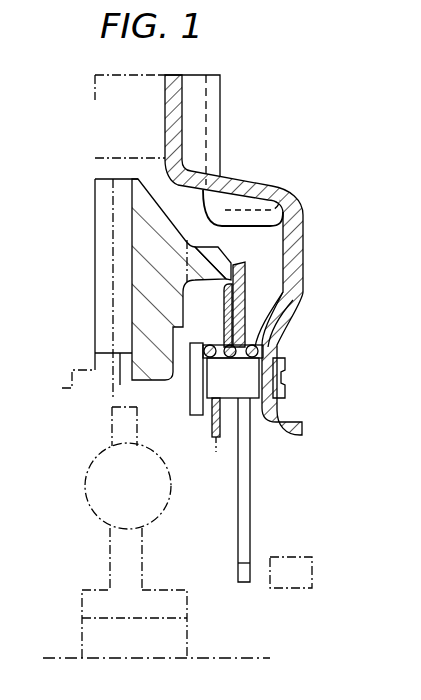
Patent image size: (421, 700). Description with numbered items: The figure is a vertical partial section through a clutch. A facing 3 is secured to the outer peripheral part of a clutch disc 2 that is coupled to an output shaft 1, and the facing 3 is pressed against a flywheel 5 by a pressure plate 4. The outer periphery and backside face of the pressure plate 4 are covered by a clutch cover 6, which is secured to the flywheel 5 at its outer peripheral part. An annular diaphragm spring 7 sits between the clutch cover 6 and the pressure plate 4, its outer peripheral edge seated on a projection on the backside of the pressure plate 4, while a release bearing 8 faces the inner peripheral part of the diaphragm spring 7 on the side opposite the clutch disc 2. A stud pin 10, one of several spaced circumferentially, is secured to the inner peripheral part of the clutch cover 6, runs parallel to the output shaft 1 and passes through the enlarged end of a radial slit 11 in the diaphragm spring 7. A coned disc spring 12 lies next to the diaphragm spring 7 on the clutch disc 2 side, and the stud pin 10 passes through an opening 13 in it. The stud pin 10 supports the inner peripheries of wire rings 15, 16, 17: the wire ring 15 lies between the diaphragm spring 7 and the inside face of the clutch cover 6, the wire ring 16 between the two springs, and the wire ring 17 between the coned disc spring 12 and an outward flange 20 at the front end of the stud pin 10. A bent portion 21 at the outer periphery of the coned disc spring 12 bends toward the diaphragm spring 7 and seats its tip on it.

The output shaft 1 is at (250, 658).
The clutch disc 2 is at (112, 538).
The facing 3 is at (113, 355).
The pressure plate 4 is at (152, 365).
The flywheel 5 is at (92, 335).
The clutch cover 6 is at (271, 192).
The diaphragm spring 7 is at (251, 512).
The release bearing 8 is at (300, 553).
The stud pin 10 is at (287, 367).
The radial slit 11 is at (250, 470).
The coned disc spring 12 is at (213, 447).
The opening 13 is at (208, 428).
The wire ring 15 is at (273, 333).
The wire ring 16 is at (226, 320).
The wire ring 17 is at (203, 380).
The outward flange 20 is at (190, 415).
The bent portion 21 is at (208, 245).